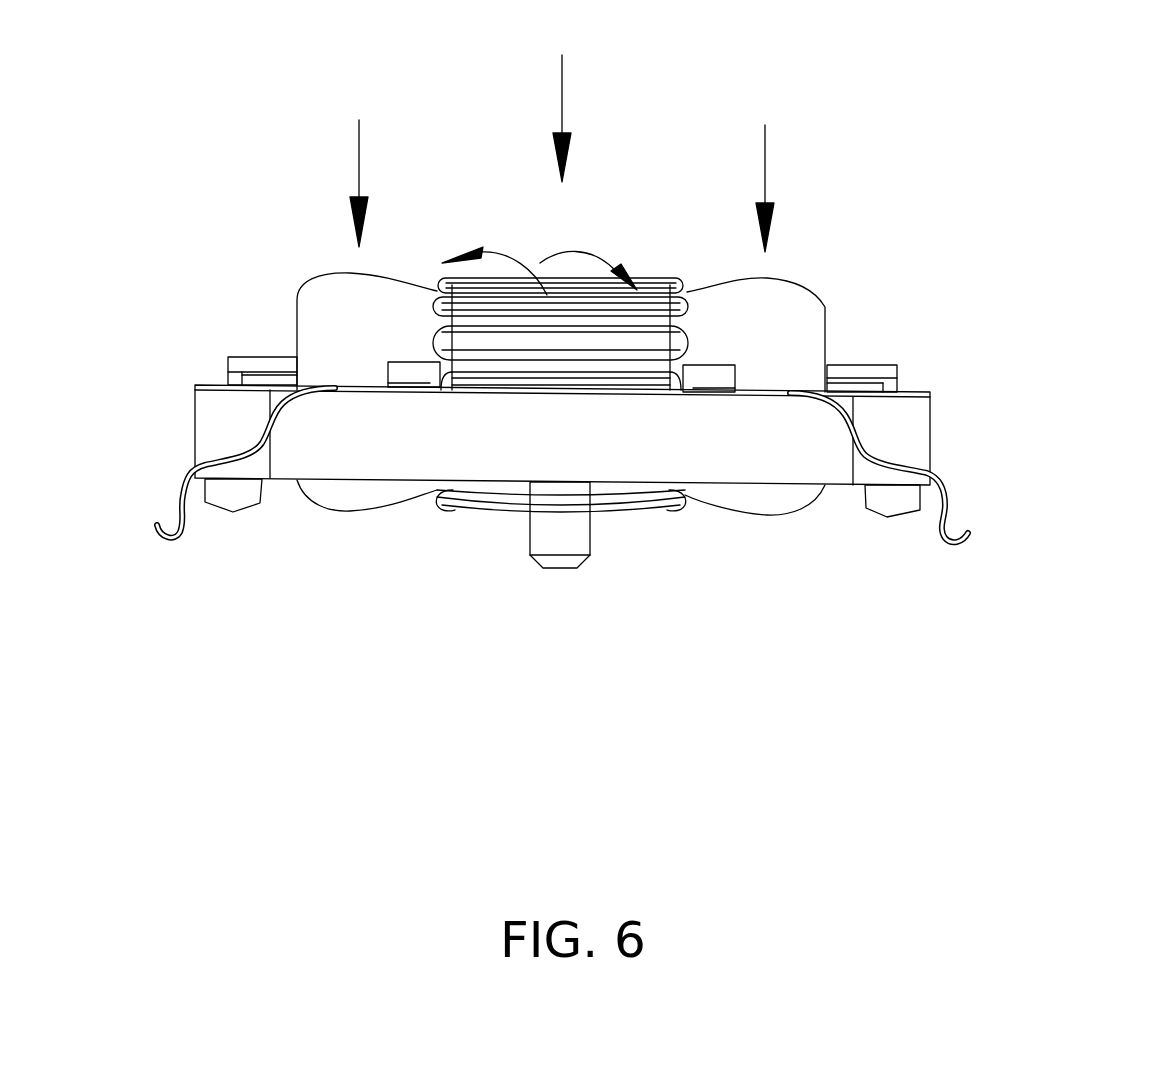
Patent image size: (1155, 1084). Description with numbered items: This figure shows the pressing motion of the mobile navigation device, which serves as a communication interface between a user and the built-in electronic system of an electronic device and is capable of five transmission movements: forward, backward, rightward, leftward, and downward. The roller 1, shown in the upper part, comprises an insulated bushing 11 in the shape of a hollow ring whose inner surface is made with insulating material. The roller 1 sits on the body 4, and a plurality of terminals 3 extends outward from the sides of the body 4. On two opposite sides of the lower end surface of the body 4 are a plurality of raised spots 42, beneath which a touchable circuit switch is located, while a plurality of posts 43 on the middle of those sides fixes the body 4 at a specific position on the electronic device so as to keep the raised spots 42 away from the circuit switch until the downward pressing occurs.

The roller 1 is at (546, 364).
The insulated bushing 11 is at (783, 337).
The terminals 3 is at (130, 498).
The body 4 is at (152, 404).
The raised spots 42 is at (232, 495).
The posts 43 is at (560, 548).